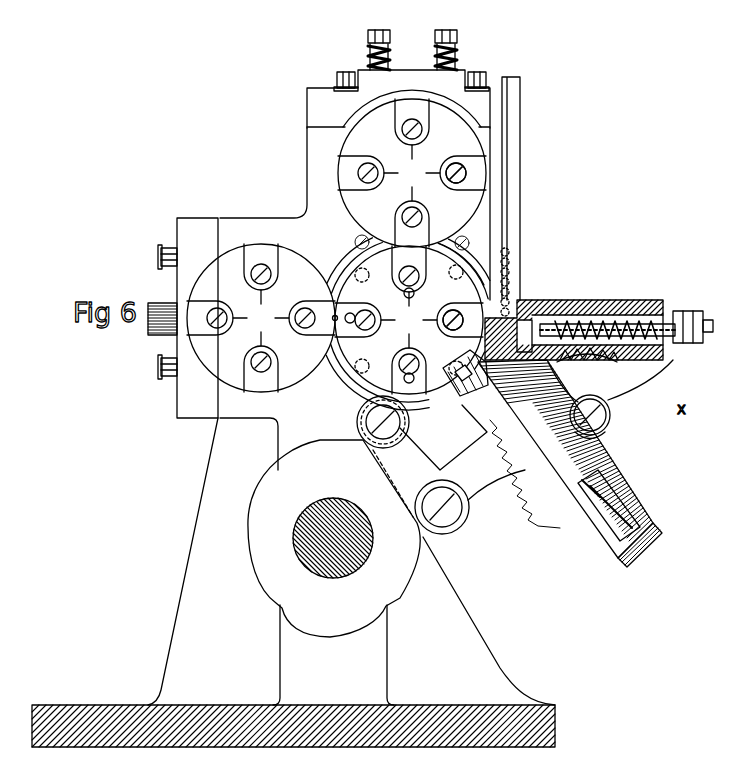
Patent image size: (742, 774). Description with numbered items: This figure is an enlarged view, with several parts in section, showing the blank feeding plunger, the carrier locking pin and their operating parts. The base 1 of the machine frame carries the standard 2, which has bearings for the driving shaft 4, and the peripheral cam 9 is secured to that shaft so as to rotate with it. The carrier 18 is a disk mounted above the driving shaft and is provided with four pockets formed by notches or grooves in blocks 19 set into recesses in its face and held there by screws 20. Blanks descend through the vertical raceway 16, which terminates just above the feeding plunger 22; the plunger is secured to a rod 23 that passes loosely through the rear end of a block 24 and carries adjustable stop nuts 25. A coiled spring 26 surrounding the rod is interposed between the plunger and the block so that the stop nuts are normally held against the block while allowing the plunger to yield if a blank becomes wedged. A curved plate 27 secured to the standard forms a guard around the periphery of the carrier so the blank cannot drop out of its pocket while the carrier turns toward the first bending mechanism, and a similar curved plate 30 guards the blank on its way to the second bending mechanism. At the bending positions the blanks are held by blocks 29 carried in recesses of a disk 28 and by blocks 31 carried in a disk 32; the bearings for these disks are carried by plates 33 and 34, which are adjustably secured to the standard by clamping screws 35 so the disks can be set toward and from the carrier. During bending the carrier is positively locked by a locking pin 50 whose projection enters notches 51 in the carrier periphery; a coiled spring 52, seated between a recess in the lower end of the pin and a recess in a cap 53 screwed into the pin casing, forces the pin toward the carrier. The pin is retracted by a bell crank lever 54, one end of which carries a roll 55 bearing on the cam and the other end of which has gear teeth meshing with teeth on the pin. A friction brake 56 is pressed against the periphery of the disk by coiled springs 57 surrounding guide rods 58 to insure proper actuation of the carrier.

The base 1 is at (555, 726).
The standard 2 is at (388, 662).
The driving shaft 4 is at (373, 538).
The peripheral cam 9 is at (252, 525).
The raceway 16 is at (518, 225).
The carrier 18 is at (365, 378).
The blocks 19 is at (443, 320).
The screws 20 is at (456, 279).
The feeding plunger 22 is at (520, 318).
The rod 23 is at (585, 322).
The block 24 is at (665, 353).
The adjustable stop nuts 25 is at (700, 311).
The coiled spring 26 is at (627, 316).
The curved plate 27 is at (475, 258).
The disk 28 is at (465, 127).
The blocks 29 is at (475, 165).
The curved plate 30 is at (333, 256).
The blocks 31 is at (280, 318).
The disk 32 is at (177, 375).
The plate 33 is at (312, 88).
The plate 34 is at (178, 222).
The clamping screws 35 is at (160, 255).
The locking pin 50 is at (592, 472).
The notches 51 is at (455, 386).
The coiled spring 52 is at (620, 490).
The cap 53 is at (652, 522).
The bell crank lever 54 is at (469, 510).
The roll 55 is at (610, 415).
The friction brake 56 is at (478, 72).
The coiled springs 57 is at (392, 50).
The guide rods 58 is at (368, 36).